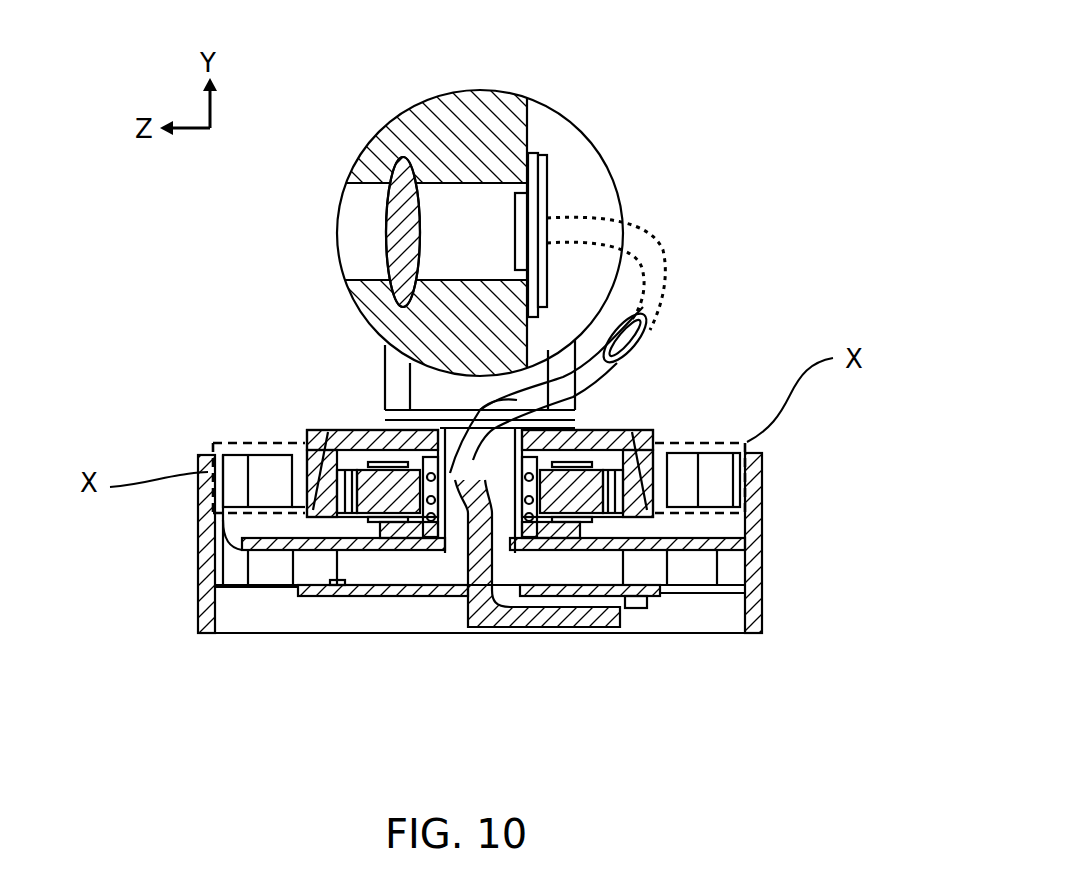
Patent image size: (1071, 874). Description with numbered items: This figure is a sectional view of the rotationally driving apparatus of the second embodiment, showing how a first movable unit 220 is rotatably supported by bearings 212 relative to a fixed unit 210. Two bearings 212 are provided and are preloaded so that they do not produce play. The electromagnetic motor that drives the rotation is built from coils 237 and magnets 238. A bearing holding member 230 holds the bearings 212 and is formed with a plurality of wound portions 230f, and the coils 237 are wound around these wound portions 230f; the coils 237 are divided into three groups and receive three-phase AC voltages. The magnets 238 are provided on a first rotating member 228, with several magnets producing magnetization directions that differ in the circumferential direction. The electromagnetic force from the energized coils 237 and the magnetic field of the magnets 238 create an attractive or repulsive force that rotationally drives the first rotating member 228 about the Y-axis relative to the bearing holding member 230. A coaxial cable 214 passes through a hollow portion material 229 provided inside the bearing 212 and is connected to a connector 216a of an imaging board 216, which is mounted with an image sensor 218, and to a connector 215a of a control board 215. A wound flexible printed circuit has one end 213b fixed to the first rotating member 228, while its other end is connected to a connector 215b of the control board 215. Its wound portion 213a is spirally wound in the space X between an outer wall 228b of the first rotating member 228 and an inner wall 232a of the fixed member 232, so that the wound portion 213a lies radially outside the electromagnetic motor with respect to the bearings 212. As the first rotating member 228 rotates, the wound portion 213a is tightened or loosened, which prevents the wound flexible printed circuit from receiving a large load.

The fixed unit 210 is at (808, 568).
The bearings 212 is at (560, 600).
The wound portion 213a is at (245, 475).
The one end of the wound FPC 213b is at (338, 472).
The coaxial cable 214 is at (580, 397).
The control board 215 is at (370, 596).
The connector 215a is at (637, 608).
The connector 215b is at (340, 590).
The imaging board 216 is at (527, 148).
The connector 216a is at (547, 175).
The image sensor 218 is at (528, 186).
The first movable unit 220 is at (652, 403).
The first rotating member 228 is at (640, 467).
The outer wall 228b is at (310, 503).
The hollow portion material 229 is at (417, 372).
The bearing holding member 230 is at (567, 530).
The wound portions 230f is at (392, 493).
The fixed member 232 is at (208, 610).
The inner wall 232a is at (212, 483).
The coils 237 is at (383, 462).
The magnets 238 is at (307, 452).